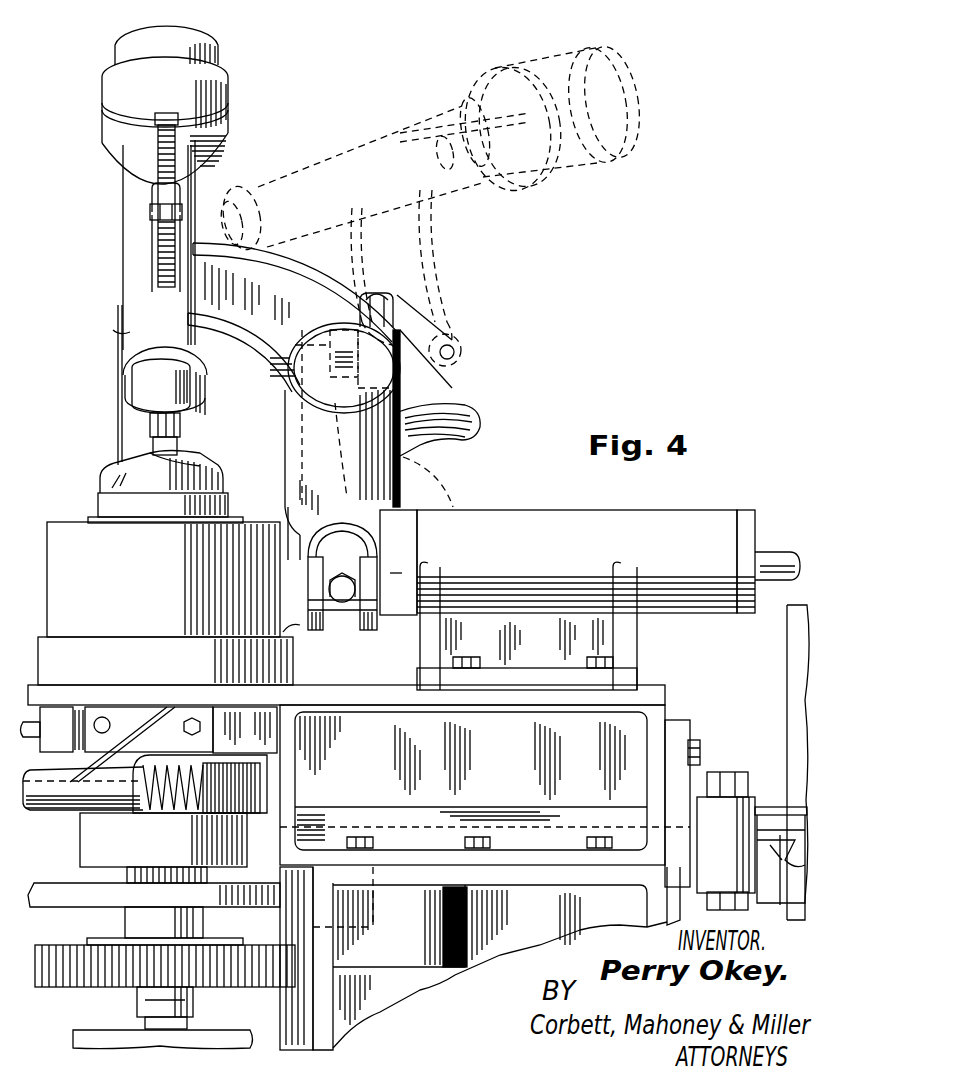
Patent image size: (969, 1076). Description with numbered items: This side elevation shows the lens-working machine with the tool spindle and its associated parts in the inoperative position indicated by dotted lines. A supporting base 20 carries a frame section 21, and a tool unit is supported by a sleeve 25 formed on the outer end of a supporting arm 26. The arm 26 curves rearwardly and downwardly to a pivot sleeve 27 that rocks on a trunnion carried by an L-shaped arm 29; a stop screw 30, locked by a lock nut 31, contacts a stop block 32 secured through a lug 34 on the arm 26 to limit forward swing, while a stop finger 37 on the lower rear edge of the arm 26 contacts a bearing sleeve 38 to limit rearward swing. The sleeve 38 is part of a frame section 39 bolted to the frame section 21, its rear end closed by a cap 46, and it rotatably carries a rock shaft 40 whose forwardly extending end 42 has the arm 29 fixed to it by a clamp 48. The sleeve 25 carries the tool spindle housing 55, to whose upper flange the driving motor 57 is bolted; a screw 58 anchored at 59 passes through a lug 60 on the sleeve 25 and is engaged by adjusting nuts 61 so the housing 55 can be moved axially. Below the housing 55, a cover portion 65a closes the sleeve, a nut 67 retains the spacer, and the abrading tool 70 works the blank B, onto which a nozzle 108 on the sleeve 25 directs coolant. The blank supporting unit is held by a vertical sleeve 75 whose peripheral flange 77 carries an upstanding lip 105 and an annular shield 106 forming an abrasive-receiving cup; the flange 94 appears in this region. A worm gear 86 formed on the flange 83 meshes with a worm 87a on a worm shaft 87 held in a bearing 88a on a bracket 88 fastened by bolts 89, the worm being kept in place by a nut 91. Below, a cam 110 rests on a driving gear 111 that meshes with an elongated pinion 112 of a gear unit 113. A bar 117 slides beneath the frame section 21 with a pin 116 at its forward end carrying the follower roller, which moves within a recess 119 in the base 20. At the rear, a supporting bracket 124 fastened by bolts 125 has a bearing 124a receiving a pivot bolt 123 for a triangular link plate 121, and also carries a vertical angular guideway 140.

The tool spindle driving motor 57 is at (176, 92).
The anchor point of screw 59 is at (160, 116).
The screw 58 is at (155, 206).
The lug 60 is at (155, 219).
The adjusting nuts 61 is at (158, 226).
The sleeve 25 is at (130, 272).
The supporting arm 26 is at (283, 276).
The lug 34 is at (360, 302).
The lock nut 31 is at (275, 351).
The stop screw 30 is at (344, 368).
The stop block 32 is at (398, 388).
The stop finger 37 is at (455, 423).
The L-shaped arm 29 is at (300, 418).
The pivot sleeve 27 is at (287, 440).
The cover portion 65a is at (152, 405).
The tool spindle housing 55 is at (195, 395).
The nozzle 108 is at (118, 444).
The nut 67 is at (188, 444).
The abrading tool 70 is at (192, 467).
The blank B is at (203, 490).
The flange 94 is at (226, 512).
The annular shield 106 is at (174, 567).
The peripheral flange 77 is at (77, 652).
The forwardly extending end of shaft 42 is at (310, 556).
The clamp 48 is at (329, 592).
The upstanding lip 105 is at (283, 634).
The bearing sleeve 38 is at (557, 554).
The cap 46 is at (748, 513).
The rock shaft 40 is at (770, 558).
The frame section 39 is at (557, 649).
The angular guideway 140 is at (787, 645).
The frame section 21 is at (513, 766).
The bar 117 is at (387, 833).
The worm gear 86 is at (270, 790).
The bolts 89 is at (100, 714).
The bracket 88 is at (133, 718).
The vertical sleeve 75 is at (215, 760).
The worm 87a is at (158, 770).
The nut 91 is at (190, 812).
The worm shaft 87 is at (140, 770).
The bearing 88a is at (48, 809).
The flange 83 is at (245, 863).
The cam 110 is at (68, 891).
The driving gear 111 is at (90, 981).
The elongated pinion 112 is at (190, 1004).
The gear unit 113 is at (240, 1039).
The pin 116 is at (295, 911).
The supporting base 20 is at (534, 939).
The recess 119 is at (405, 948).
The bolts 125 is at (700, 752).
The pivot bolt 123 is at (730, 775).
The bearing 124a is at (728, 838).
The link plate 121 is at (765, 808).
The supporting bracket 124 is at (768, 880).